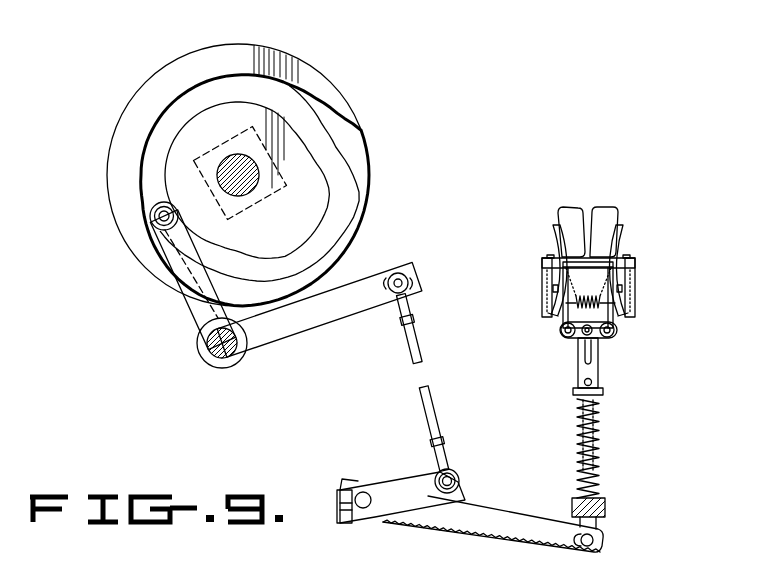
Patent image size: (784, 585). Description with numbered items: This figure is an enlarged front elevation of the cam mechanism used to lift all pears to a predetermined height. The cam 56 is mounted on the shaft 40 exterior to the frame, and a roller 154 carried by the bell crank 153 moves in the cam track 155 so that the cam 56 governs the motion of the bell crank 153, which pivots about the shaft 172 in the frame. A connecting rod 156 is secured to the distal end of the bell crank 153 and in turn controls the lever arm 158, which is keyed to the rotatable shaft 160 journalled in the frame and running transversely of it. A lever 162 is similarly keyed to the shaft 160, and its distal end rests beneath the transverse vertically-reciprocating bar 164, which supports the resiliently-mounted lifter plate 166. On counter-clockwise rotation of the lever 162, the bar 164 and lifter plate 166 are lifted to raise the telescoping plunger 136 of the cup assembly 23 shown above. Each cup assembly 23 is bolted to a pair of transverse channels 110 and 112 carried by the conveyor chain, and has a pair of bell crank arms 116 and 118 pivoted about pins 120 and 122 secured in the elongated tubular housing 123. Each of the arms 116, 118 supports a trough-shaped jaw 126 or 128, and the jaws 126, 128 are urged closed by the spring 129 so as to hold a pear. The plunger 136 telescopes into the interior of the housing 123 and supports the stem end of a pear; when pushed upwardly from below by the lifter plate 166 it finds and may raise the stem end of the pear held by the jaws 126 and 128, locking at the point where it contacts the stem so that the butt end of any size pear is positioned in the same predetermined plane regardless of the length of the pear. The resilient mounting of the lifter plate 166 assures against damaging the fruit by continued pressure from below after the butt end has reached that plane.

The cam 56 is at (379, 117).
The cam track 155 is at (298, 94).
The shaft 40 is at (236, 156).
The roller 154 is at (152, 214).
The bell crank 153 is at (187, 307).
The shaft 172 is at (217, 353).
The connecting rod 156 is at (423, 361).
The lever arm 158 is at (408, 478).
The rotatable shaft 160 is at (364, 507).
The lever 162 is at (527, 533).
The transverse vertically-reciprocating bar 164 is at (606, 513).
The lifter plate 166 is at (604, 392).
The plunger 136 is at (581, 372).
The cup assembly 23 is at (642, 226).
The transverse channel 110 is at (634, 288).
The transverse channel 112 is at (543, 282).
The bell crank arm 116 is at (553, 238).
The bell crank arm 118 is at (628, 250).
The trough-shaped jaw 126 is at (569, 207).
The trough-shaped jaw 128 is at (607, 207).
The elongated tubular housing 123 is at (582, 280).
The pin 120 is at (569, 339).
The pin 122 is at (609, 335).
The spring 129 is at (600, 310).